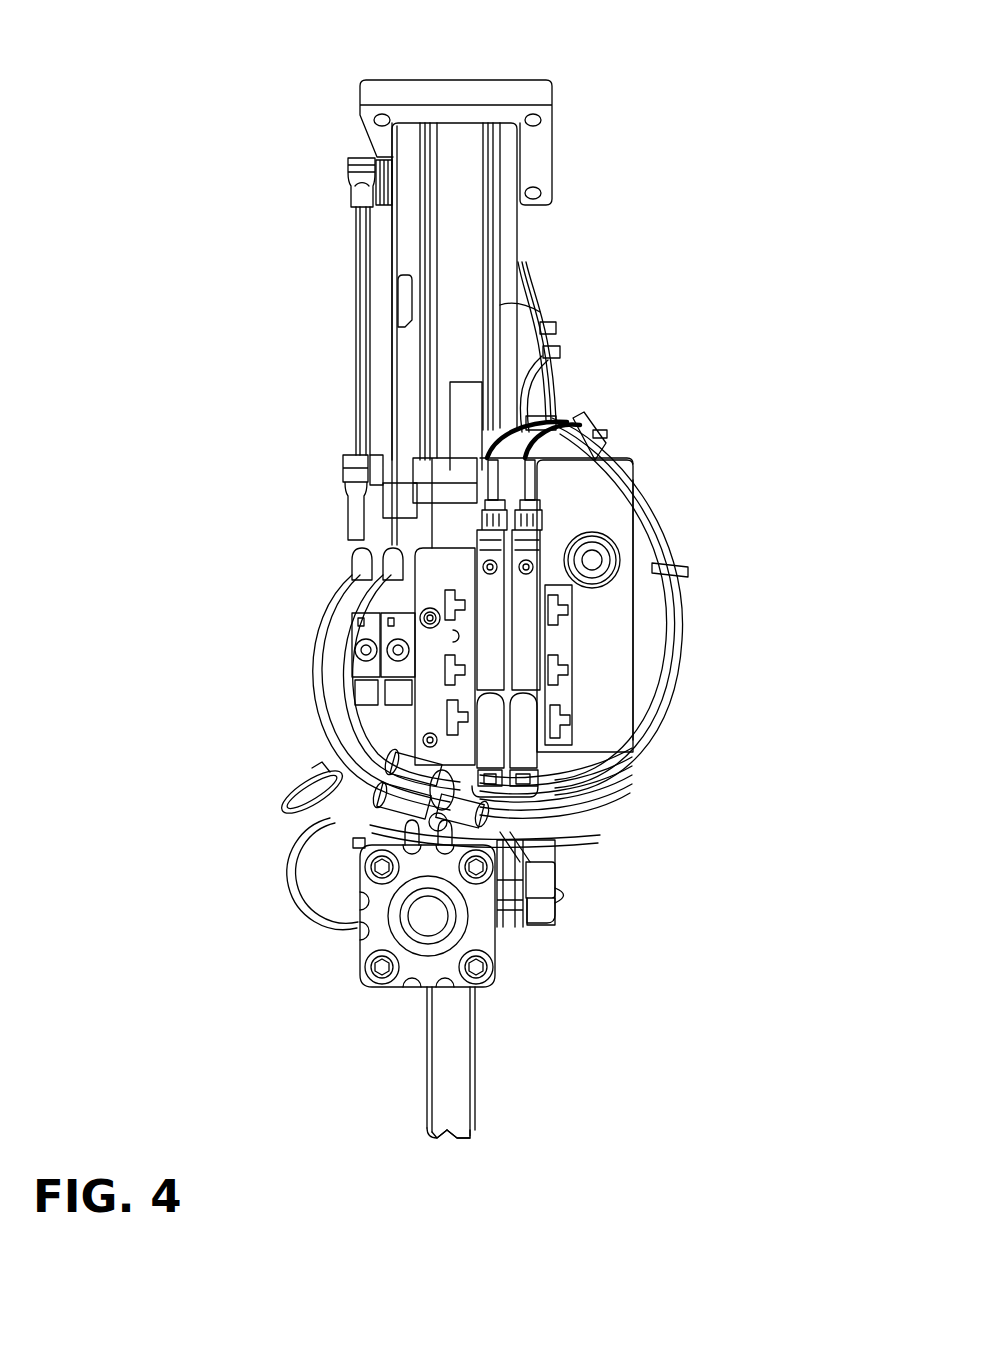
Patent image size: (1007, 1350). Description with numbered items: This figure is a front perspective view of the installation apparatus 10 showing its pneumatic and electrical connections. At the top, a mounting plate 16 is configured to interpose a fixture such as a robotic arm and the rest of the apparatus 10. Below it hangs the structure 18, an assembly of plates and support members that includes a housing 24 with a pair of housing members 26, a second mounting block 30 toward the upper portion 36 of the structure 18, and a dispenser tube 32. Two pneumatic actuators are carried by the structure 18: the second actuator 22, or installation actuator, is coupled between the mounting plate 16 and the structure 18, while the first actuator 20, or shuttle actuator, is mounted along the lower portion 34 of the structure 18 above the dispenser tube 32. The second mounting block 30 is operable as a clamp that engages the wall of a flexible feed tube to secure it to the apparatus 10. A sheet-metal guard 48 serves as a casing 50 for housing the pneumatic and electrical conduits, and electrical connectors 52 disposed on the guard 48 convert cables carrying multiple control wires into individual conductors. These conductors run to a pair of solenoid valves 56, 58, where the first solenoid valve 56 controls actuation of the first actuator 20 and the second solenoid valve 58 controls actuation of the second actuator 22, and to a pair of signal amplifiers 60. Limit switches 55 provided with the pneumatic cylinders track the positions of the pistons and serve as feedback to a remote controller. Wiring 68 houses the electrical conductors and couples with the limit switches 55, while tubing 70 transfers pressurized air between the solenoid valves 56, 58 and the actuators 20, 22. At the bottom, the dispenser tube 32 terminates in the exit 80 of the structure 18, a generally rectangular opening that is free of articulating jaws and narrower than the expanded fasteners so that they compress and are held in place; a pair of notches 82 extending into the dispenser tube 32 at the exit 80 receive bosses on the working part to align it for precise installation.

The installation apparatus 10 is at (700, 268).
The mounting plate 16 is at (402, 92).
The structure 18 is at (664, 461).
The first actuator 20 is at (428, 985).
The second actuator 22 is at (377, 143).
The housing 24 is at (407, 533).
The housing members 26 is at (420, 477).
The second mounting block 30 is at (435, 522).
The dispenser tube 32 is at (477, 1044).
The lower portion 34 is at (600, 885).
The upper portion 36 is at (630, 440).
The guard 48 is at (595, 500).
The casing 50 is at (636, 634).
The electrical connectors 52 is at (590, 438).
The limit switches 55 is at (370, 905).
The first solenoid valve 56 is at (362, 608).
The second solenoid valve 58 is at (396, 612).
The signal amplifiers 60 is at (525, 650).
The wiring 68 is at (550, 338).
The tubing 70 is at (352, 699).
The exit 80 is at (475, 1138).
The notches 82 is at (432, 1128).